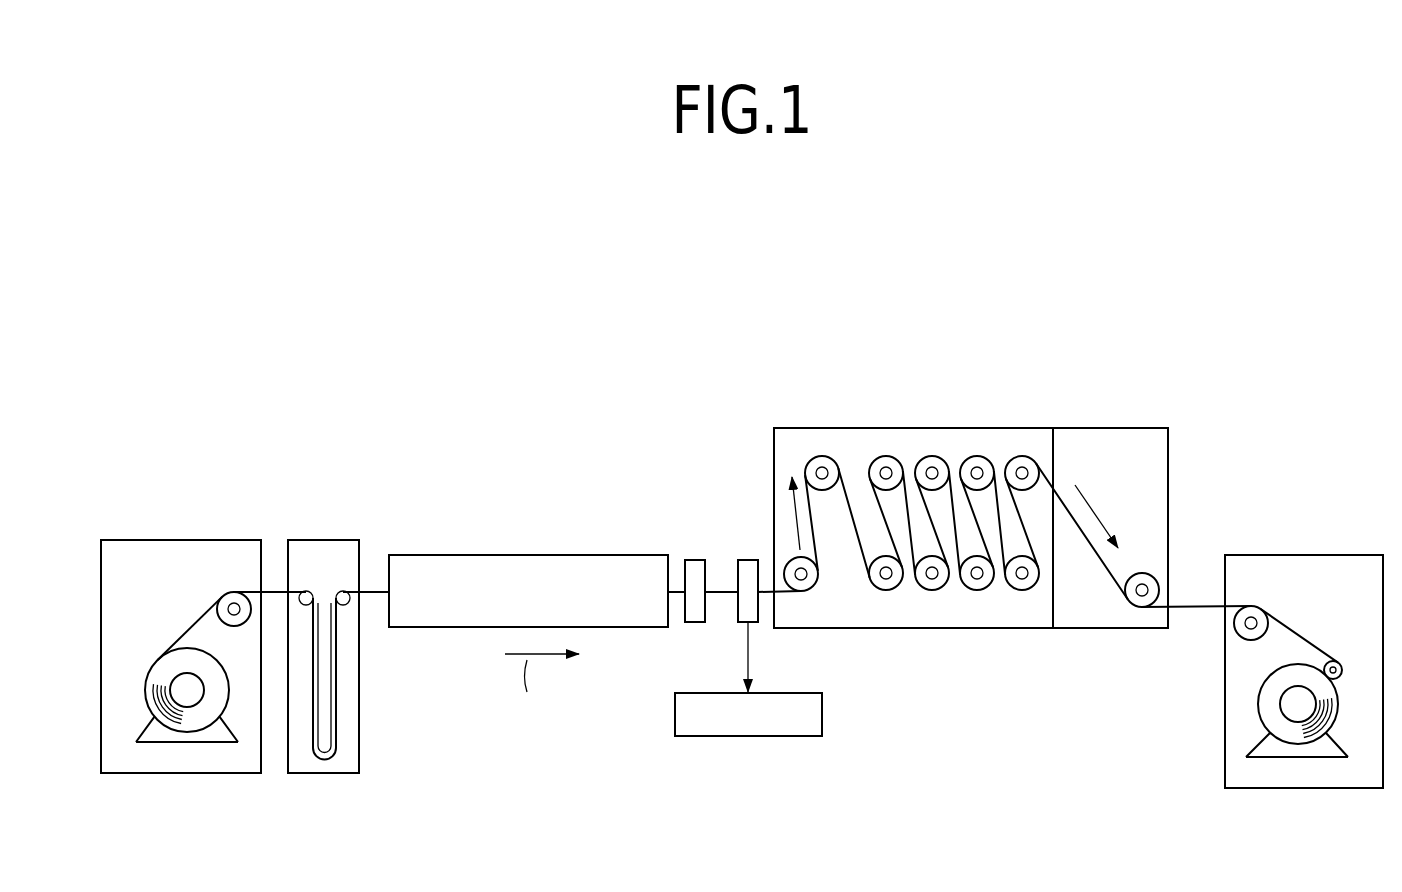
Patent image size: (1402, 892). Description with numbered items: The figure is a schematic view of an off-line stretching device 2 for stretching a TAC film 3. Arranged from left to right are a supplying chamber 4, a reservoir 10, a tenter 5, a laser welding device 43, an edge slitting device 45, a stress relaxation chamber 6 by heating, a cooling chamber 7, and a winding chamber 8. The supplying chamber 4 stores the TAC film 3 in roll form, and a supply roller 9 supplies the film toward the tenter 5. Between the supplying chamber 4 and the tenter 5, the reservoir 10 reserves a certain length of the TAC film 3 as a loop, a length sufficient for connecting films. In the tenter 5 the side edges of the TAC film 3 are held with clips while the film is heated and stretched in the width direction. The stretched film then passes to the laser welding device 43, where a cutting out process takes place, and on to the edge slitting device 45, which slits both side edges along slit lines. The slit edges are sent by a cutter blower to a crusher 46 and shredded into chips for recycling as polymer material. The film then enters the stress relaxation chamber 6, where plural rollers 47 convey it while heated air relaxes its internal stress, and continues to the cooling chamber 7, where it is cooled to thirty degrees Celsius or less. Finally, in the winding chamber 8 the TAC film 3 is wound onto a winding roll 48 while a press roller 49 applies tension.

The off-line stretching device 2 is at (973, 243).
The TAC film 3 is at (273, 590).
The supplying chamber 4 is at (181, 540).
The tenter 5 is at (528, 555).
The stress relaxation chamber 6 is at (822, 428).
The cooling chamber 7 is at (1110, 428).
The winding chamber 8 is at (1305, 555).
The supply roller 9 is at (225, 603).
The reservoir 10 is at (323, 540).
The laser welding device 43 is at (695, 575).
The edge slitting device 45 is at (748, 575).
The crusher 46 is at (675, 717).
The rollers 47 is at (973, 466).
The winding roll 48 is at (1290, 708).
The press roller 49 is at (1335, 662).